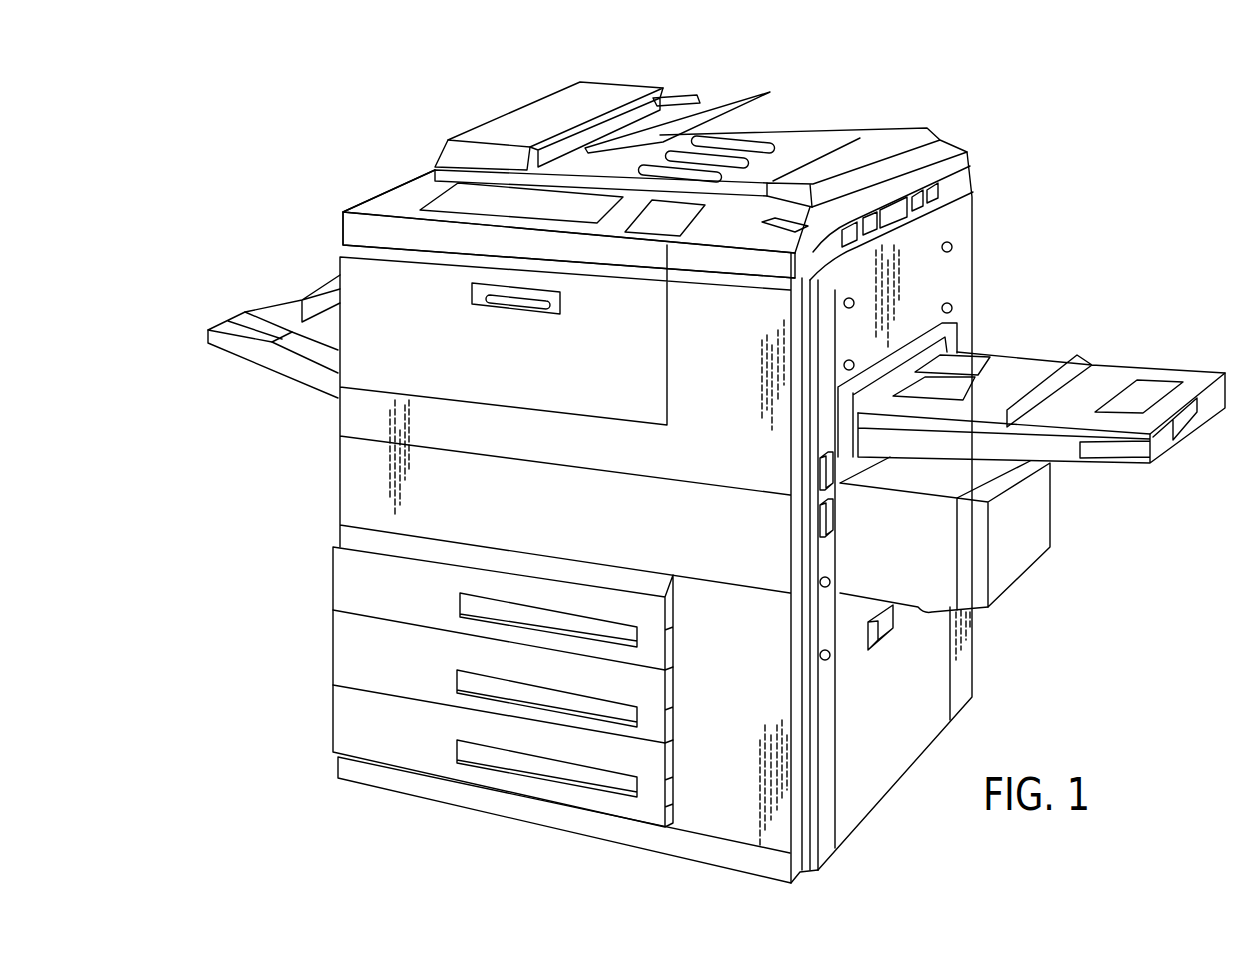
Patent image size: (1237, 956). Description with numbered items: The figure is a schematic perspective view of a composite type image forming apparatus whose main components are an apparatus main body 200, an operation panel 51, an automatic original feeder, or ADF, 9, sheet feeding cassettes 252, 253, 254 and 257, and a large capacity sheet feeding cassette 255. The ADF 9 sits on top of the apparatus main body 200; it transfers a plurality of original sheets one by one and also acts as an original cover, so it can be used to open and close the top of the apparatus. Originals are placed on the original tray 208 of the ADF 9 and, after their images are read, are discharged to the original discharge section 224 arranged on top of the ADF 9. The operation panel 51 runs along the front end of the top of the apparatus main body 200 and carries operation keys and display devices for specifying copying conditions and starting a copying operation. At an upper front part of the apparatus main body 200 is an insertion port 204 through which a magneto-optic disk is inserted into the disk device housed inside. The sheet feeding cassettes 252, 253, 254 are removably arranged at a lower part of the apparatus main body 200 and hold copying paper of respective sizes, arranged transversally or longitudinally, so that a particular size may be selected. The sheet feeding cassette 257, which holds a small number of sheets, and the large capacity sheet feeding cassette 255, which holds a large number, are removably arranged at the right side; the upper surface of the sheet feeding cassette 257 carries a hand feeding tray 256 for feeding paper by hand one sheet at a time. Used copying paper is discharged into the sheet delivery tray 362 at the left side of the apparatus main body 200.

The apparatus main body 200 is at (1145, 224).
The automatic original feeder (ADF) 9 is at (479, 96).
The operation panel 51 is at (404, 187).
The original tray 208 is at (708, 112).
The original discharge section 224 is at (826, 150).
The insertion port 204 is at (507, 315).
The sheet delivery tray 362 is at (238, 350).
The hand feeding tray 256 is at (1047, 372).
The sheet feeding cassette 257 is at (1118, 468).
The large capacity sheet feeding cassette 255 is at (1003, 567).
The sheet feeding cassette 252 is at (330, 589).
The sheet feeding cassette 253 is at (330, 664).
The sheet feeding cassette 254 is at (330, 744).